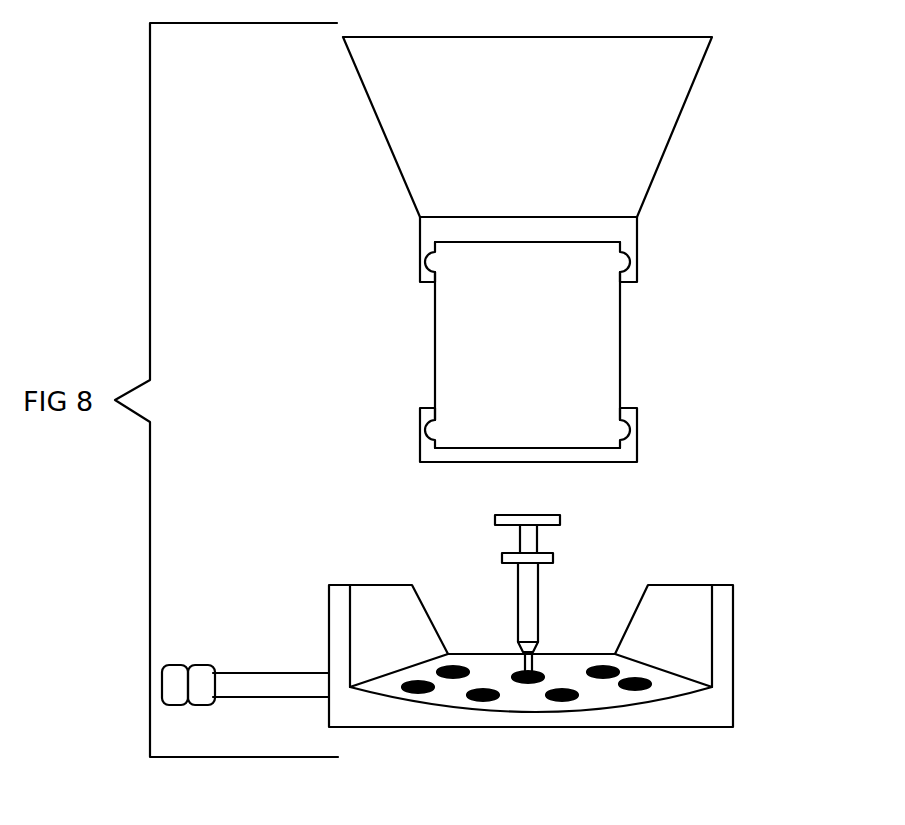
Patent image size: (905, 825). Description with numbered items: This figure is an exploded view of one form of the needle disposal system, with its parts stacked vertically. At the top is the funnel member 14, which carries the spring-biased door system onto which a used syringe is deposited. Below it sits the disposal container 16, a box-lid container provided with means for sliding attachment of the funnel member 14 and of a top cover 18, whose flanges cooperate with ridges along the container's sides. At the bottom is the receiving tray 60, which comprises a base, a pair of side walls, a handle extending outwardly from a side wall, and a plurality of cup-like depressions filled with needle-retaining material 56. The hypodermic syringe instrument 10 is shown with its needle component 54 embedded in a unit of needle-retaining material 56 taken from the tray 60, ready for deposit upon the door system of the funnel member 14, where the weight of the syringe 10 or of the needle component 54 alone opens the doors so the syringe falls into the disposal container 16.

The funnel member 14 is at (667, 147).
The disposal container 16 is at (623, 332).
The top cover 18 is at (638, 435).
The hypodermic syringe instrument 10 is at (580, 588).
The needle component 54 is at (604, 616).
The needle-retaining material 56 is at (426, 605).
The receiving tray 60 is at (463, 640).